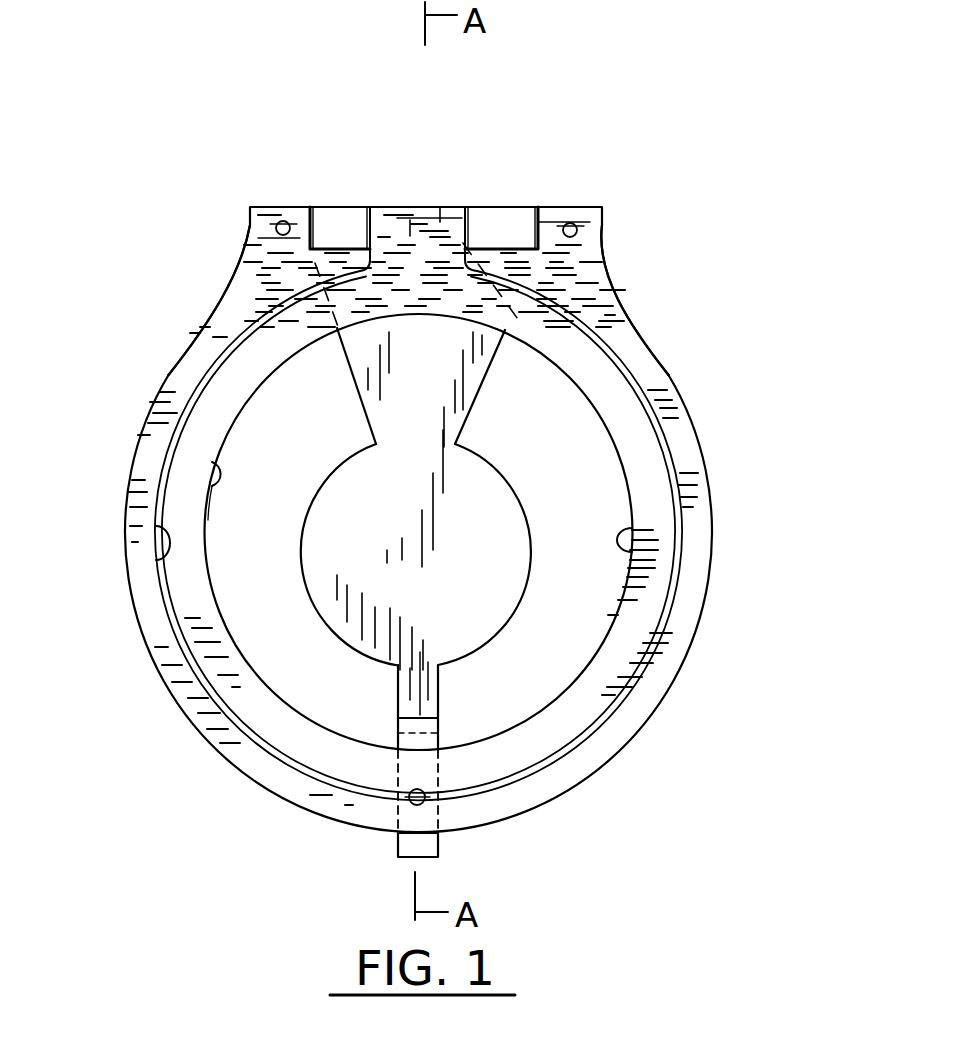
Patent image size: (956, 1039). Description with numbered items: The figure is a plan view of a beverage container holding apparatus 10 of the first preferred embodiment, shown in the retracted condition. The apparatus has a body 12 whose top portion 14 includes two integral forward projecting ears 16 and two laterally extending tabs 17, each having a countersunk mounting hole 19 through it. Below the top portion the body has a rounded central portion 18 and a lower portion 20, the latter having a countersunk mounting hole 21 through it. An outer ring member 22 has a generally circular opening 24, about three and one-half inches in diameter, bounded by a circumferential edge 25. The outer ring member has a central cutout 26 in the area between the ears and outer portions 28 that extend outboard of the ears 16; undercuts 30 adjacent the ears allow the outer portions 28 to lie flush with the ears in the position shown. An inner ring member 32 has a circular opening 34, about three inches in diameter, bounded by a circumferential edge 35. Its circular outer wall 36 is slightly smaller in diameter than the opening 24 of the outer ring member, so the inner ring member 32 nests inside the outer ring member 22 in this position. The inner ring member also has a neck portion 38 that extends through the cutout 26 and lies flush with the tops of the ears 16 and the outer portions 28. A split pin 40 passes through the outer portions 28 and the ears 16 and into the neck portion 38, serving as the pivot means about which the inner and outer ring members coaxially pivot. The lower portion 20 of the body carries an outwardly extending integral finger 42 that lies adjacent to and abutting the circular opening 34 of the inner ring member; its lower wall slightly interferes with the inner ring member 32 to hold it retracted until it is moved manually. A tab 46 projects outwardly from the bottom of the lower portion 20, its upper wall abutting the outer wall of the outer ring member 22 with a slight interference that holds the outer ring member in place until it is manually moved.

The beverage container holding apparatus 10 is at (762, 316).
The body 12 is at (512, 466).
The top portion 14 is at (605, 282).
The ears 16 is at (317, 205).
The laterally extending tabs 17 is at (258, 248).
The rounded central portion 18 is at (533, 592).
The countersunk mounting holes 19 is at (252, 217).
The lower portion 20 is at (440, 742).
The countersunk mounting hole 21 is at (400, 803).
The outer ring member 22 is at (707, 473).
The circular opening 24 is at (635, 533).
The circumferential edge 25 is at (667, 438).
The central cutout 26 is at (423, 222).
The outer portions 28 is at (277, 208).
The undercuts 30 is at (338, 208).
The inner ring member 32 is at (207, 413).
The circular opening 34 is at (207, 478).
The circumferential edge 35 is at (203, 537).
The circular outer wall 36 is at (162, 527).
The neck portion 38 is at (400, 207).
The split pin 40 is at (552, 218).
The finger 42 is at (398, 737).
The tab 46 is at (438, 848).